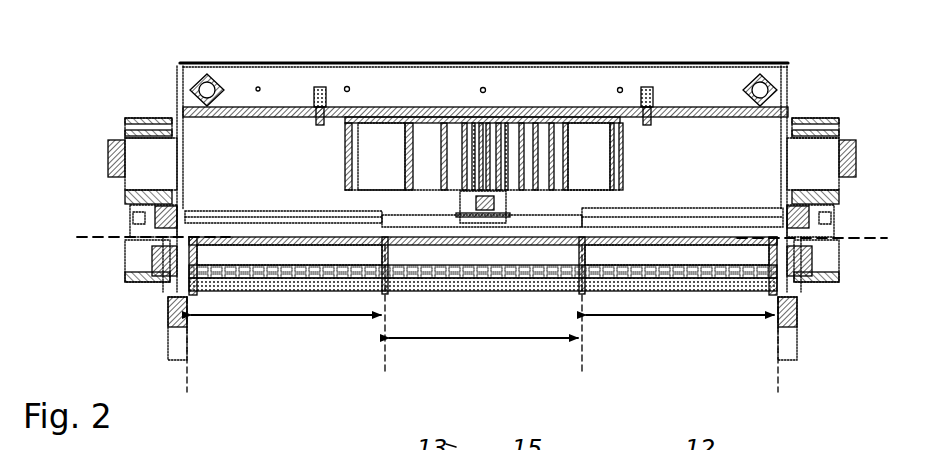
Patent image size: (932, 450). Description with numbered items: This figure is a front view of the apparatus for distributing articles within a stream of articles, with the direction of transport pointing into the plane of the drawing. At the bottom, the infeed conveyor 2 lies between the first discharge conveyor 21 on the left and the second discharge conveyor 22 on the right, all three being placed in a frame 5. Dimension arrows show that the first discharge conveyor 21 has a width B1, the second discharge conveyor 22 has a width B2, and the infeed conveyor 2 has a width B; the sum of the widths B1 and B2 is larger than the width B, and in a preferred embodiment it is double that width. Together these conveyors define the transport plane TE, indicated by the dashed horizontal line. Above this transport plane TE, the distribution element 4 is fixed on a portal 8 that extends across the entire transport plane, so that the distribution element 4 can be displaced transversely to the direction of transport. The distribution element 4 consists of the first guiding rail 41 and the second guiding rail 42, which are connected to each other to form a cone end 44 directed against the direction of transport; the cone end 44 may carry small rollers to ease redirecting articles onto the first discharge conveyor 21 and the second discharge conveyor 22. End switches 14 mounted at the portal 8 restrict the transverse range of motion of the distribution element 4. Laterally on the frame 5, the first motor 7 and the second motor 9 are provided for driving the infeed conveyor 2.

The infeed conveyor 2 is at (495, 253).
The distribution element 4 is at (430, 192).
The frame 5 is at (173, 308).
The first motor 7 is at (148, 172).
The portal 8 is at (504, 75).
The second motor 9 is at (830, 172).
The end switches 14 is at (321, 97).
The first discharge conveyor 21 is at (272, 257).
The second discharge conveyor 22 is at (723, 252).
The first guiding rail 41 is at (337, 198).
The second guiding rail 42 is at (622, 200).
The cone end 44 is at (485, 205).
The transport plane TE is at (103, 237).
The width of the infeed conveyor B is at (522, 340).
The width of the first discharge conveyor B1 is at (337, 317).
The width of the second discharge conveyor B2 is at (667, 317).